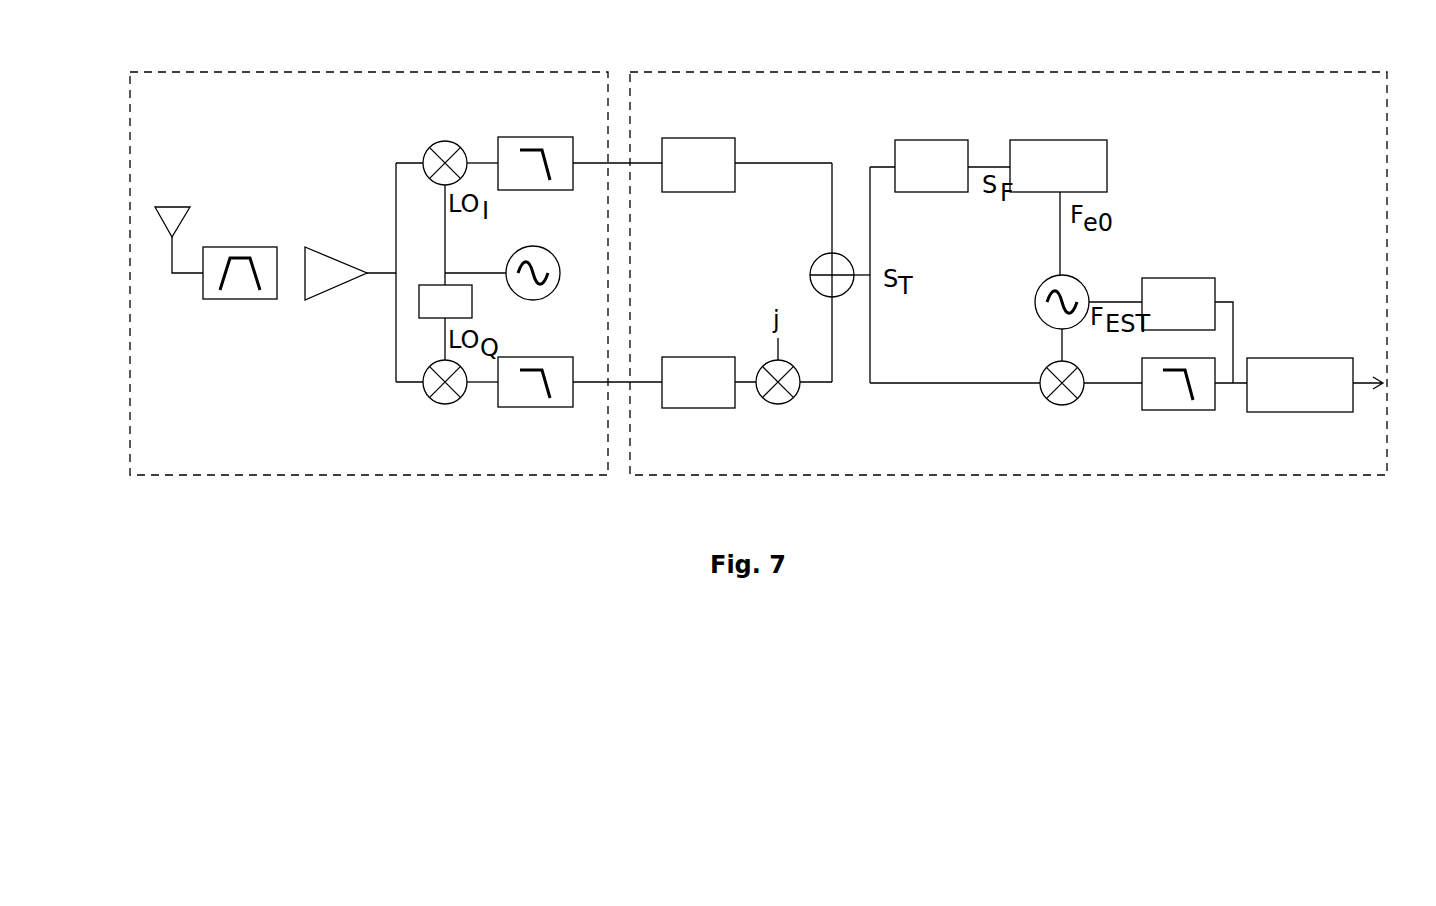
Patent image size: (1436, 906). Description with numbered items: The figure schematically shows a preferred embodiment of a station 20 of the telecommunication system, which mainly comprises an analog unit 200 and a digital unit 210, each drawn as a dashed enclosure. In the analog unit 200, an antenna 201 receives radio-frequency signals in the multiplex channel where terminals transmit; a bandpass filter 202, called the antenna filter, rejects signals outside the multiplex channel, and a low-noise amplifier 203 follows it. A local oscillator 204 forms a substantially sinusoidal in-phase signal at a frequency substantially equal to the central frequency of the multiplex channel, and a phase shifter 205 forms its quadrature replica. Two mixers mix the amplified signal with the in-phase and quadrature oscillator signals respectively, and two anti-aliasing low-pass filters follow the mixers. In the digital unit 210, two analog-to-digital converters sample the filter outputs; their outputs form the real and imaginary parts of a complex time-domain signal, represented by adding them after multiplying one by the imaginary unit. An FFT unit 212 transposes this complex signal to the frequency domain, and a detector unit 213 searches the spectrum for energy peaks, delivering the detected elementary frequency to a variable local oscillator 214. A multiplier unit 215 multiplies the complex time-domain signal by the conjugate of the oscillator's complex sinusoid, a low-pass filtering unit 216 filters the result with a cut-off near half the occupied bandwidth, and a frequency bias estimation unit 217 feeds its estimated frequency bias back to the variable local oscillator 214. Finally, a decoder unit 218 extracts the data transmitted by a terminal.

The station 20 is at (328, 500).
The analog unit 200 is at (547, 475).
The antenna 201 is at (158, 210).
The bandpass filter 202 is at (277, 283).
The low-noise amplifier 203 is at (347, 285).
The local oscillator 204 is at (560, 276).
The phase shifter 205 is at (419, 293).
The digital unit 210 is at (1057, 475).
The FFT unit 212 is at (895, 155).
The detector unit 213 is at (1107, 155).
The variable local oscillator 214 is at (1042, 280).
The multiplier unit 215 is at (1082, 392).
The low-pass filtering unit 216 is at (1185, 410).
The frequency bias estimation unit 217 is at (1198, 278).
The decoder unit 218 is at (1298, 358).